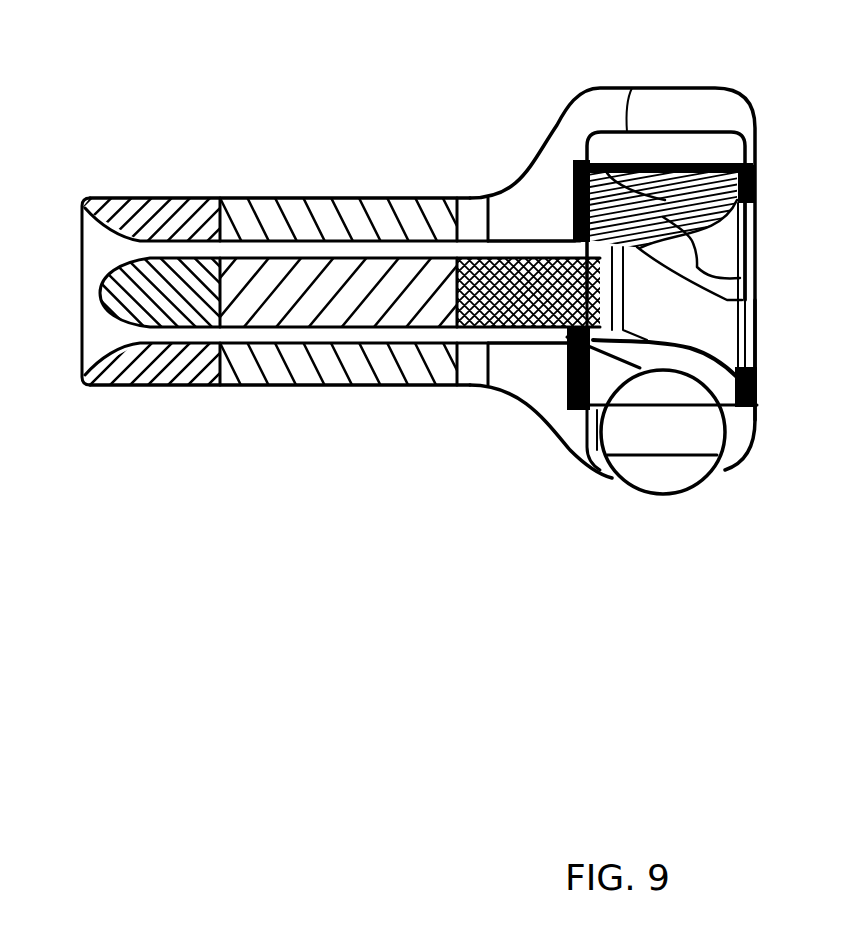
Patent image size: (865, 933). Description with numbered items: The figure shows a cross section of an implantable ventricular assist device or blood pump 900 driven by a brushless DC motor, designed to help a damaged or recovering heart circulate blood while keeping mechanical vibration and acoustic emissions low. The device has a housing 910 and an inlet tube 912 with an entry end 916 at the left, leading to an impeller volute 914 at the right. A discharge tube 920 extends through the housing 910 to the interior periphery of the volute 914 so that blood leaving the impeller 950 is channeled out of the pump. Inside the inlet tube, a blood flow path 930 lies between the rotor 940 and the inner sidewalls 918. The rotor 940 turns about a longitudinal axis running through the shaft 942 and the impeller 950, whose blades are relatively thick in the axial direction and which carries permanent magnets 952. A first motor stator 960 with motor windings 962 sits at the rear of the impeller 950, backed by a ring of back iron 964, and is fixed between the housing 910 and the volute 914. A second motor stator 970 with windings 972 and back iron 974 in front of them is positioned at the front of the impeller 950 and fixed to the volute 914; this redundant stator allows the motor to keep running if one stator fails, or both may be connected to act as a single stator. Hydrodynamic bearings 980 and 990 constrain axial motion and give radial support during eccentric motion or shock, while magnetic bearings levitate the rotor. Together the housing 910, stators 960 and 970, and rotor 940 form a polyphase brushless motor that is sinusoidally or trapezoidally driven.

The ventricular assist device 900 is at (114, 113).
The housing 910 is at (665, 88).
The inlet tube 912 is at (207, 212).
The impeller volute 914 is at (632, 88).
The entry end 916 is at (98, 328).
The inner sidewalls 918 is at (340, 360).
The discharge tube 920 is at (683, 448).
The blood flow path 930 is at (278, 337).
The rotor 940 is at (110, 265).
The shaft 942 is at (318, 247).
The impeller 950 is at (760, 277).
The permanent magnets 952 is at (685, 173).
The first motor stator 960 is at (758, 310).
The motor windings 962 is at (758, 165).
The back iron 964 is at (760, 180).
The second motor stator 970 is at (560, 363).
The windings 972 is at (567, 440).
The back iron 974 is at (573, 410).
The hydrodynamic bearing 980 is at (550, 210).
The hydrodynamic bearing 990 is at (760, 323).